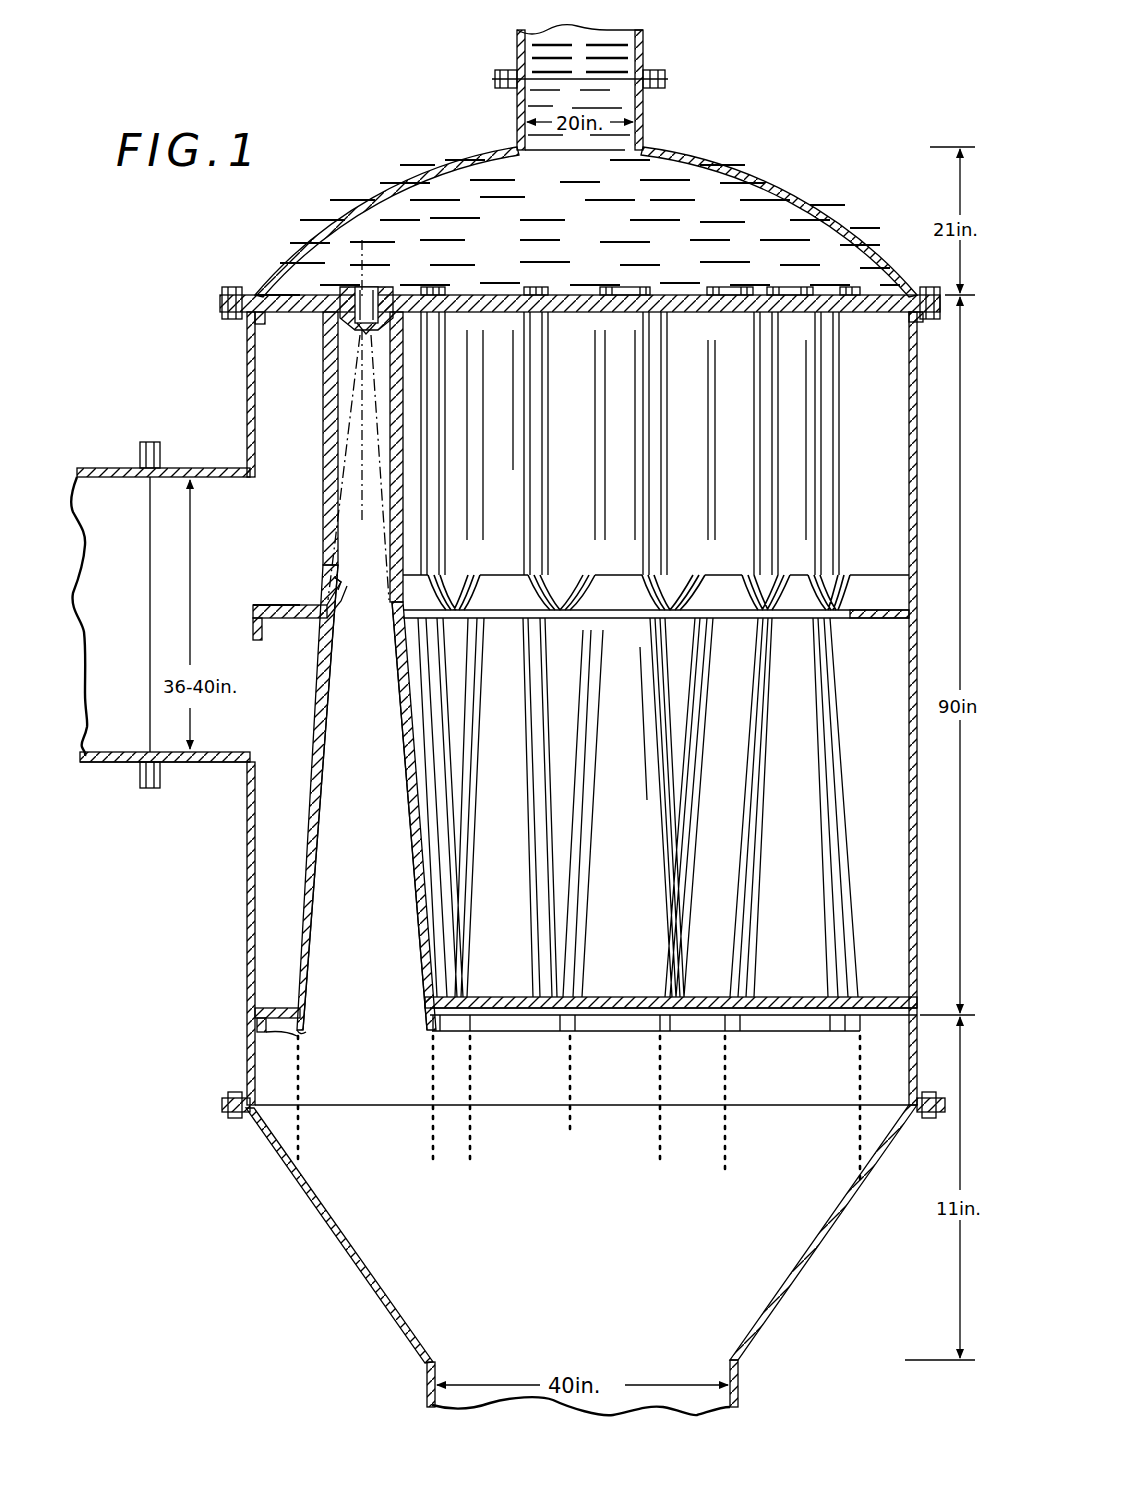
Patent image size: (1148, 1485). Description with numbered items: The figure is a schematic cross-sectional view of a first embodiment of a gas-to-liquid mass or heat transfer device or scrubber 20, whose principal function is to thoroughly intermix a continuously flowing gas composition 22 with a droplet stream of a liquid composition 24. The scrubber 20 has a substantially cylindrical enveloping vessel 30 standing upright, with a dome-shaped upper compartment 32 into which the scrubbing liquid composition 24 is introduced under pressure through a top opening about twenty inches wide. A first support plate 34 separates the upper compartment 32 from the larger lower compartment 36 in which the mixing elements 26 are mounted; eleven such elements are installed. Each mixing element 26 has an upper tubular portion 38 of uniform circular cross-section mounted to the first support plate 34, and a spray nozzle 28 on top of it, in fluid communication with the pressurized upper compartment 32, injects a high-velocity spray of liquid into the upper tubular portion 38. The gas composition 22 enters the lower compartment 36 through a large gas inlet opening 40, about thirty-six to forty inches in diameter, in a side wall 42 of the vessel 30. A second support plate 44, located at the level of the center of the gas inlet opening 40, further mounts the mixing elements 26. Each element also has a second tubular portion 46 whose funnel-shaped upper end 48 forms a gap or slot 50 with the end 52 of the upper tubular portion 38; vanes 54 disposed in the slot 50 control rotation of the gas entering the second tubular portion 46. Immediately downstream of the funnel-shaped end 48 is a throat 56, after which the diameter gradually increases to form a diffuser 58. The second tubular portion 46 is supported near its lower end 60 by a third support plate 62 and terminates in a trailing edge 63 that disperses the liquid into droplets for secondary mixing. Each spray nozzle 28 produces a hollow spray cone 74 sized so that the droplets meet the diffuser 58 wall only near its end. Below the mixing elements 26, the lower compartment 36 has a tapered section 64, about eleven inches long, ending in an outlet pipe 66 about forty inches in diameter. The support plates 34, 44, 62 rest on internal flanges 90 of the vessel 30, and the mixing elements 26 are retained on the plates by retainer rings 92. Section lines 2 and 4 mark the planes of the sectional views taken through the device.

The scrubber 20 is at (557, 708).
The gas composition 22 is at (160, 619).
The liquid composition 24 is at (628, 47).
The mixing element 26 is at (426, 330).
The spray nozzle 28 is at (368, 290).
The enveloping vessel 30 is at (246, 374).
The upper compartment 32 is at (718, 172).
The first support plate 34 is at (858, 306).
The lower compartment 36 is at (912, 428).
The upper tubular portion 38 is at (323, 393).
The gas inlet opening 40 is at (108, 702).
The side wall 42 is at (247, 804).
The second support plate 44 is at (860, 612).
The second tubular portion 46 is at (349, 799).
The funnel-shaped upper end 48 is at (300, 564).
The gap or slot 50 is at (586, 563).
The end of first tubular portion 52 is at (338, 576).
The vanes 54 is at (327, 582).
The throat 56 is at (362, 626).
The diffuser 58 is at (312, 800).
The lower end 60 is at (307, 985).
The third support plate 62 is at (272, 1008).
The trailing edge 63 is at (295, 1036).
The tapered section 64 is at (318, 1236).
The outlet pipe 66 is at (426, 1392).
The spray cone 74 is at (402, 756).
The internal flanges 90 is at (263, 320).
The retainer rings 92 is at (287, 296).
The section line 2- 2 is at (940, 603).
The section line 4- 4 is at (352, 247).